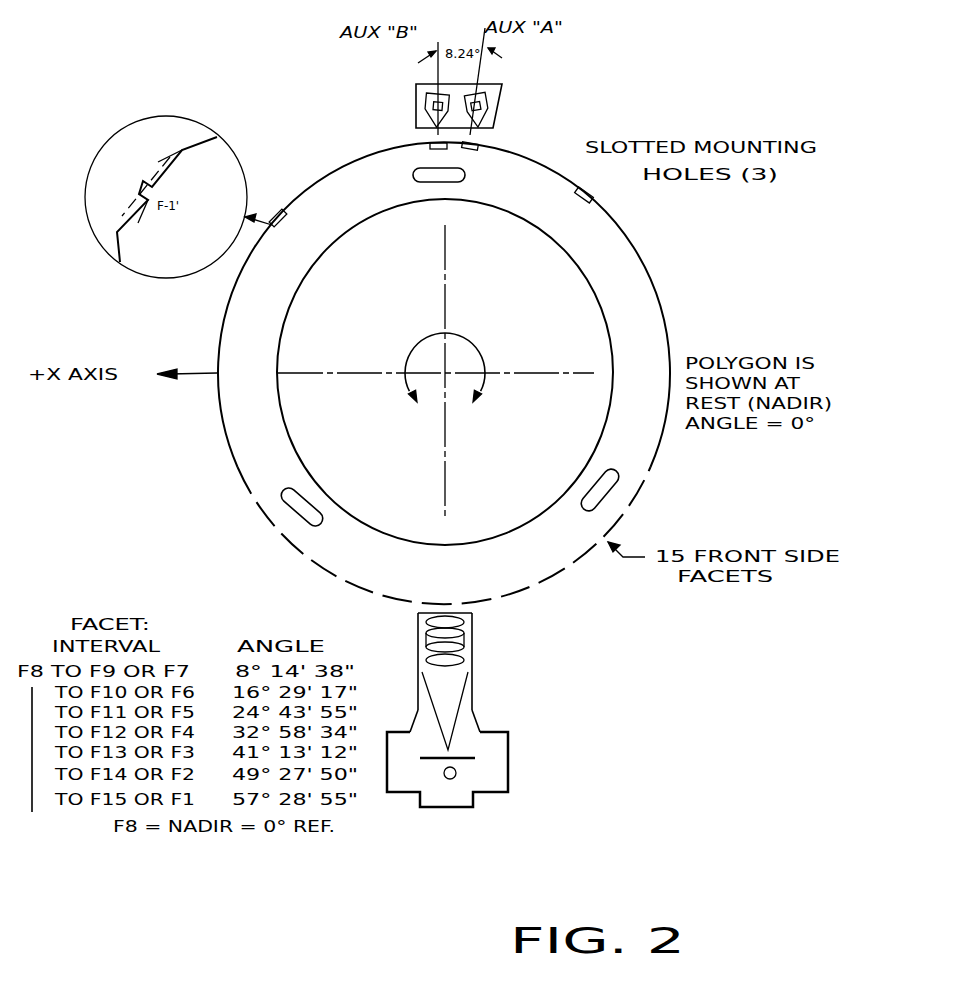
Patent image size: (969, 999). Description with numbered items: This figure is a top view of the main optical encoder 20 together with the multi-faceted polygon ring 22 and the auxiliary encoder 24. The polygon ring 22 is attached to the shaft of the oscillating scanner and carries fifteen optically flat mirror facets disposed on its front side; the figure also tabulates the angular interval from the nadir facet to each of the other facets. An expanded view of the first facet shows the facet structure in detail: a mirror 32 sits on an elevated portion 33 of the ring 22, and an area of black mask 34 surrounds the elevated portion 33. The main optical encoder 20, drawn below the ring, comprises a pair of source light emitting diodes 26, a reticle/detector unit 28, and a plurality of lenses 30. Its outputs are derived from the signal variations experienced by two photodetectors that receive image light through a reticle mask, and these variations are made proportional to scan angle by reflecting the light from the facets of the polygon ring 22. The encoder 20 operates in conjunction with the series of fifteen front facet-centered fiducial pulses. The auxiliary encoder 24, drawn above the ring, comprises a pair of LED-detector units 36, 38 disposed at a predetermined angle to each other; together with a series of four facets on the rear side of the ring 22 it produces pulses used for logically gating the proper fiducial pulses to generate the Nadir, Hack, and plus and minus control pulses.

The main optical encoder 20 is at (508, 743).
The multi-faceted polygon ring 22 is at (658, 293).
The auxiliary encoder 24 is at (416, 108).
The source light emitting diodes 26 is at (450, 779).
The reticle/detector unit 28 is at (465, 760).
The lenses 30 is at (480, 635).
The mirror 32 is at (133, 185).
The elevated portion 33 is at (145, 195).
The black mask 34 is at (158, 162).
The LED-detector unit 36 is at (427, 102).
The LED-detector unit 38 is at (490, 102).